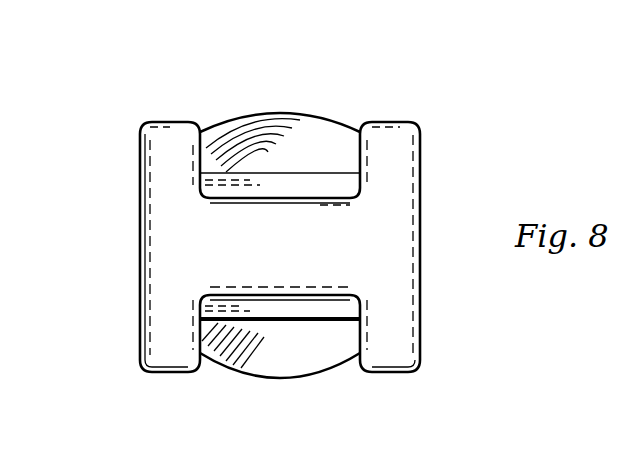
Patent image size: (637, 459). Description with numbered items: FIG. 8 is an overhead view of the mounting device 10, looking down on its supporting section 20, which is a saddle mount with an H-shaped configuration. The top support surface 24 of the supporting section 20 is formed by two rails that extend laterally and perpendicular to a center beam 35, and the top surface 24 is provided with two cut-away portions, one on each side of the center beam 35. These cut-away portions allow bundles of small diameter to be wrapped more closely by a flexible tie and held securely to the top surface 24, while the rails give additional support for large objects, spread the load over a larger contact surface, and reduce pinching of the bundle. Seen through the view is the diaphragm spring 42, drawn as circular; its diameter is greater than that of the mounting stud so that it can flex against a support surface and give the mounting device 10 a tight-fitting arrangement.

The mounting device 10 is at (410, 79).
The supporting section 20 is at (120, 124).
The top support surface 24 is at (172, 226).
The center beam 35 is at (270, 242).
The diaphragm spring 42 is at (233, 355).